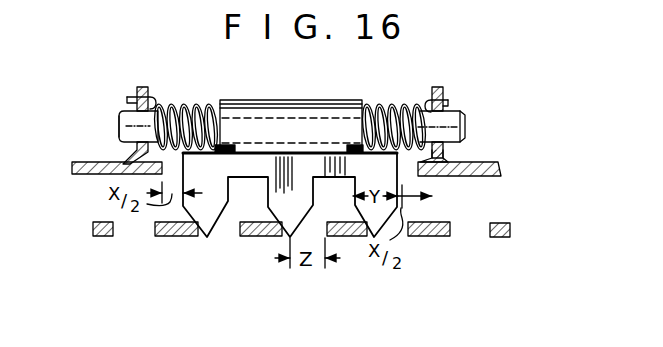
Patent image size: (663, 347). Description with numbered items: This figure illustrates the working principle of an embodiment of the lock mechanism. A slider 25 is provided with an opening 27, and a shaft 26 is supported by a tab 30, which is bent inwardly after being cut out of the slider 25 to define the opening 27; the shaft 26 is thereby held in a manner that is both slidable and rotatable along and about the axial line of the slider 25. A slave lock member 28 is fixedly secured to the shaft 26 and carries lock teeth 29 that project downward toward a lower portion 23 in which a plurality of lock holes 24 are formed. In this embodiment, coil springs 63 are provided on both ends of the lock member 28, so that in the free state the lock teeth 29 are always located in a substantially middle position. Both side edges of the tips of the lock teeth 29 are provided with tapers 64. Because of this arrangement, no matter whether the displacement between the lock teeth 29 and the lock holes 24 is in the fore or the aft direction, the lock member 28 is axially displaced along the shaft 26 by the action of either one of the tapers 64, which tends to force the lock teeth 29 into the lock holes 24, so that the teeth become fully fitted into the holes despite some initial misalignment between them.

The lower portion 23 is at (501, 237).
The lock holes 24 is at (448, 231).
The slider 25 is at (481, 176).
The shaft 26 is at (467, 121).
The opening 27 is at (424, 166).
The slave lock member 28 is at (295, 103).
The lock teeth 29 is at (276, 212).
The tab 30 is at (148, 88).
The coil springs 63 is at (173, 105).
The tapers 64 is at (212, 227).